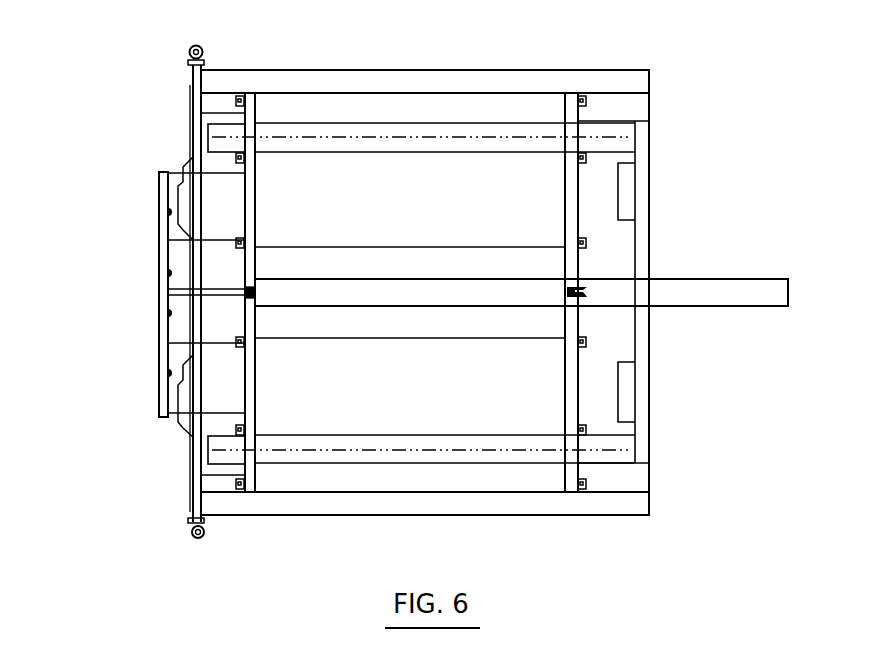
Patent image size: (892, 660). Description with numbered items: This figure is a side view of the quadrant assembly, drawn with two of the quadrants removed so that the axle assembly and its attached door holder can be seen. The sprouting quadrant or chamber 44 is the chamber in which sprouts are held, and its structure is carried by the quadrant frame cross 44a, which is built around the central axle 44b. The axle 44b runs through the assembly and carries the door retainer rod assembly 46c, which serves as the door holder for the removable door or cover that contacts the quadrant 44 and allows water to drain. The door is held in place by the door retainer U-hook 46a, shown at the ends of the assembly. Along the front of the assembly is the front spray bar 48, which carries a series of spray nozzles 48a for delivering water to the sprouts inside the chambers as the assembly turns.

The sprouting quadrant 44 is at (383, 84).
The quadrant frame cross 44a is at (255, 393).
The axle 44b is at (696, 302).
The door retainer U-hook 46a is at (195, 44).
The door retainer rod assembly 46c is at (225, 478).
The front spray bar 48 is at (160, 352).
The spray nozzle 48a is at (168, 373).